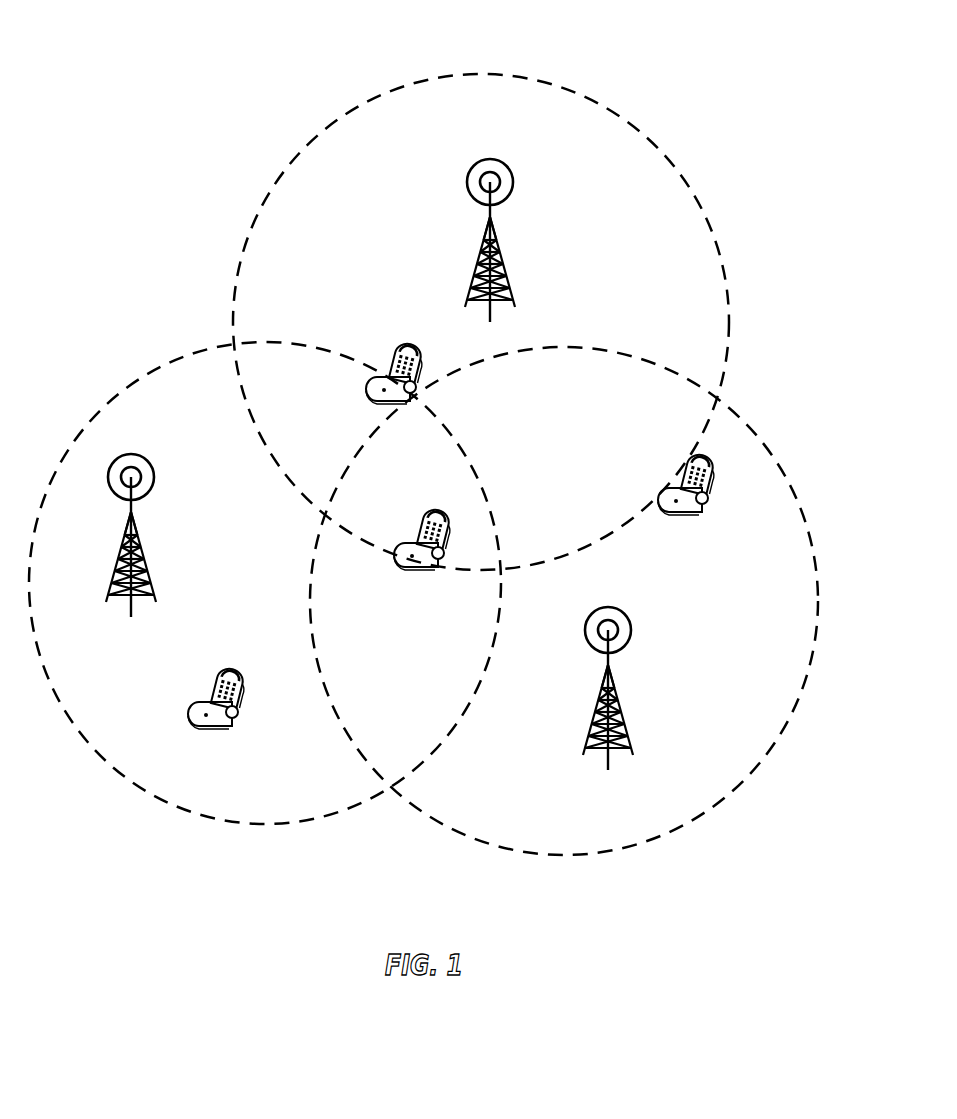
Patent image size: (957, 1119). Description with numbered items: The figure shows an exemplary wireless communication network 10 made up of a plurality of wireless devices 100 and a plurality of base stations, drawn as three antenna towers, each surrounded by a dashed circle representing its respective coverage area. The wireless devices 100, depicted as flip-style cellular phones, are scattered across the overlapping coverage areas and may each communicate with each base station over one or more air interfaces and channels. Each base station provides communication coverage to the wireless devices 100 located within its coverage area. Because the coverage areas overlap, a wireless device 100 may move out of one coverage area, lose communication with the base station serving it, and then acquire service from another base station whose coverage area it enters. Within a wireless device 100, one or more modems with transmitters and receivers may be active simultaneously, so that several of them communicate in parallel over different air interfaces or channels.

The network 10 is at (692, 73).
The wireless device 100 is at (411, 344).